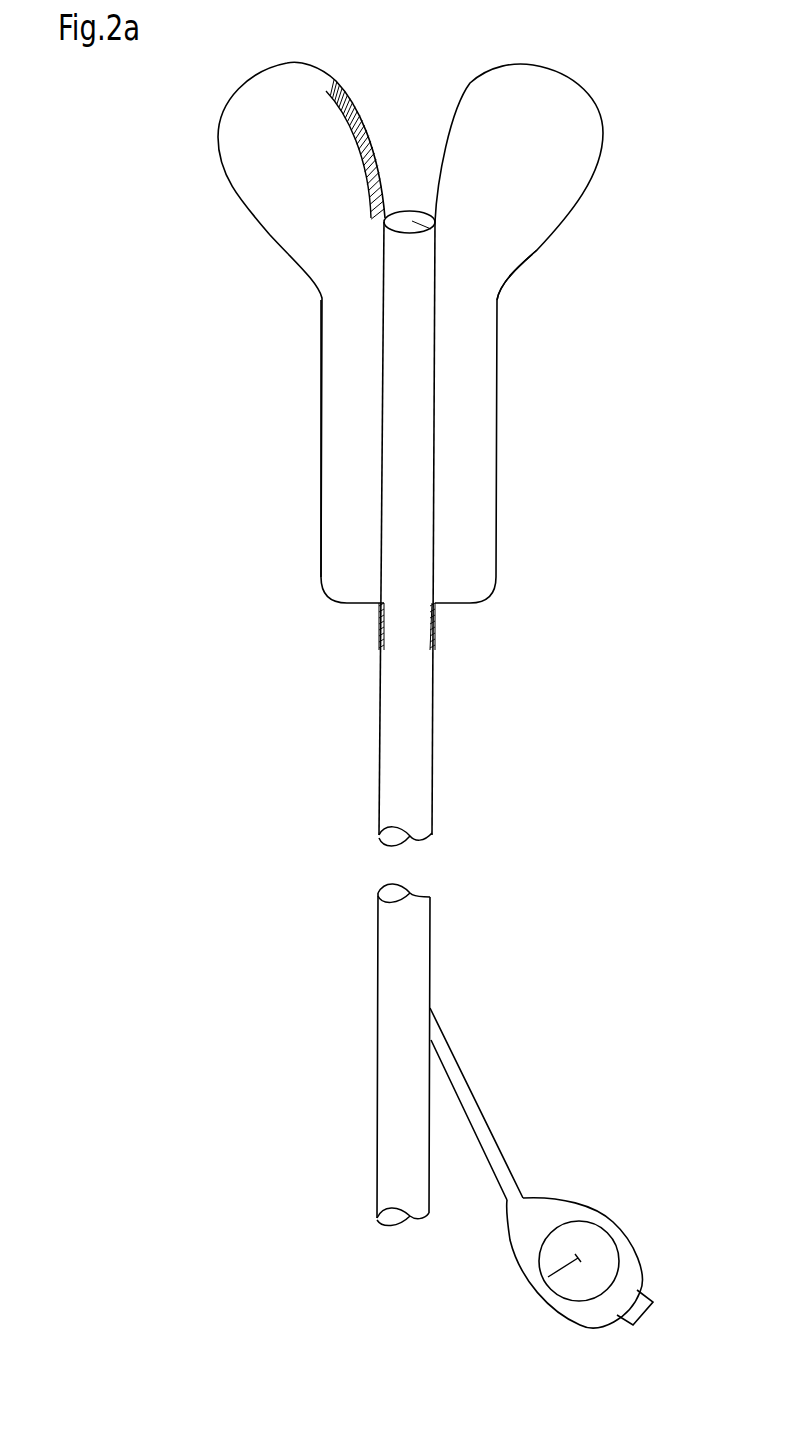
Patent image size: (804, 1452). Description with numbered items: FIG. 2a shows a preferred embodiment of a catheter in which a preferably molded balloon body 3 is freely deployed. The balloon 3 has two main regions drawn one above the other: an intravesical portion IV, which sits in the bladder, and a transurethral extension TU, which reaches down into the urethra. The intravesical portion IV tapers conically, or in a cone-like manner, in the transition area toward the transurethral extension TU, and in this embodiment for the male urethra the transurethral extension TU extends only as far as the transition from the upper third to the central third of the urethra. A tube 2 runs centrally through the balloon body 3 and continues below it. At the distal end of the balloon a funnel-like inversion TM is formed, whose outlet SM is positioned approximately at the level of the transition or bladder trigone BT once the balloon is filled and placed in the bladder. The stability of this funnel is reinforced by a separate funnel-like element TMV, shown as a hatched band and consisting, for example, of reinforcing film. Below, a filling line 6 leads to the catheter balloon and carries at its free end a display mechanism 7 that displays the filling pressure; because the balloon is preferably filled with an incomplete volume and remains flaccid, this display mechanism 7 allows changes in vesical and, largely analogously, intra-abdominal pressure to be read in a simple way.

The tube 2 is at (379, 735).
The balloon body 3 is at (405, 332).
The filling line 6 is at (456, 1090).
The display mechanism 7 is at (616, 1218).
The intravesical portion IV is at (218, 137).
The funnel-like element TMV is at (356, 128).
The funnel-like inversion TM is at (409, 182).
The outlet SM is at (436, 222).
The bladder trigone BT is at (532, 248).
The transurethral extension TU is at (321, 422).